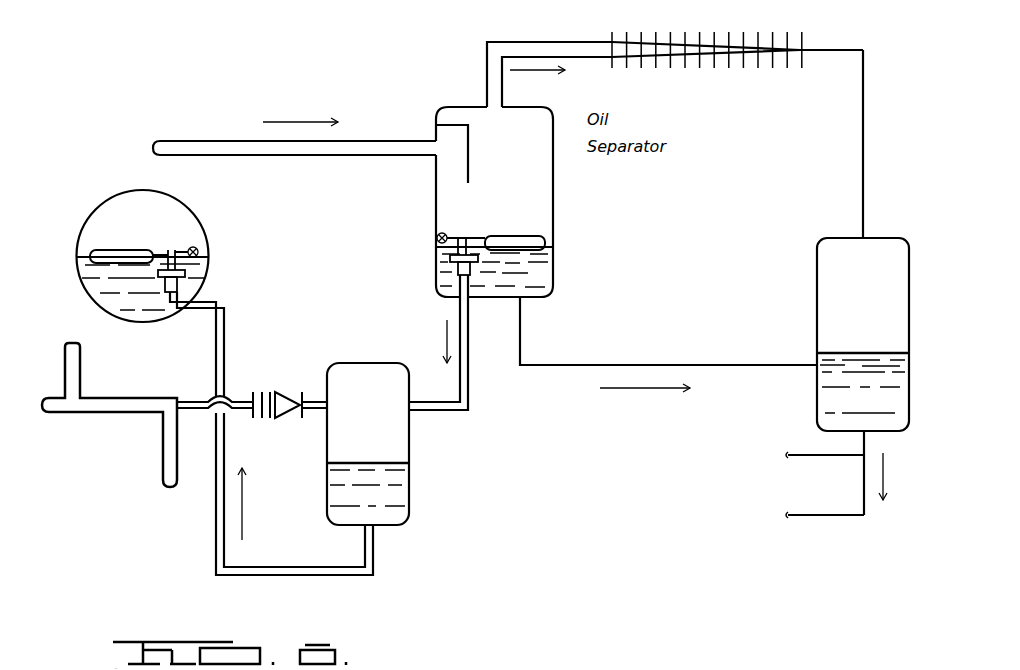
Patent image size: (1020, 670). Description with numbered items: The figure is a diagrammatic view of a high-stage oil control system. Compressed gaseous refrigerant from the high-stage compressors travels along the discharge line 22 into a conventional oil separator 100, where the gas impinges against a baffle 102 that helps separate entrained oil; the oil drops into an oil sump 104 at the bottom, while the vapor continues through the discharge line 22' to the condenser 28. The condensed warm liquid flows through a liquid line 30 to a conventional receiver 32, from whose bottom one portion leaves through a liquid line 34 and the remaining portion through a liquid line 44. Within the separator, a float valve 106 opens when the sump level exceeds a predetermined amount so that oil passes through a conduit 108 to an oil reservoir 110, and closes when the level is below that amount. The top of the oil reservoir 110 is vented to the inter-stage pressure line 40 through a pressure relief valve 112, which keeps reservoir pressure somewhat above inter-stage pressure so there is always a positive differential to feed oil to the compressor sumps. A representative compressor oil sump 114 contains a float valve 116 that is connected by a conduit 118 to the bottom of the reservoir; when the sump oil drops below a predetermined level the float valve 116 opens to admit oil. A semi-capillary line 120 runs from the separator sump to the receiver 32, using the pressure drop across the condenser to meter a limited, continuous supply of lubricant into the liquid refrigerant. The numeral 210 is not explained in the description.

The discharge line 22 is at (294, 157).
The discharge line 22' is at (549, 54).
The condenser 28 is at (703, 46).
The liquid line 30 is at (864, 180).
The receiver 32 is at (817, 303).
The liquid line 34 is at (805, 456).
The line 40 is at (163, 462).
The liquid line 44 is at (818, 516).
The oil separator 100 is at (553, 198).
The baffle 102 is at (470, 160).
The oil sump 104 is at (535, 273).
The float valve 106 is at (455, 268).
The conduit 108 is at (468, 388).
The oil reservoir 110 is at (409, 488).
The pressure relief valve 112 is at (283, 398).
The oil sump 114 is at (205, 228).
The float valve 116 is at (180, 286).
The conduit 118 is at (216, 556).
The semi-capillary line 120 is at (747, 366).
The reference 210 is at (651, 666).